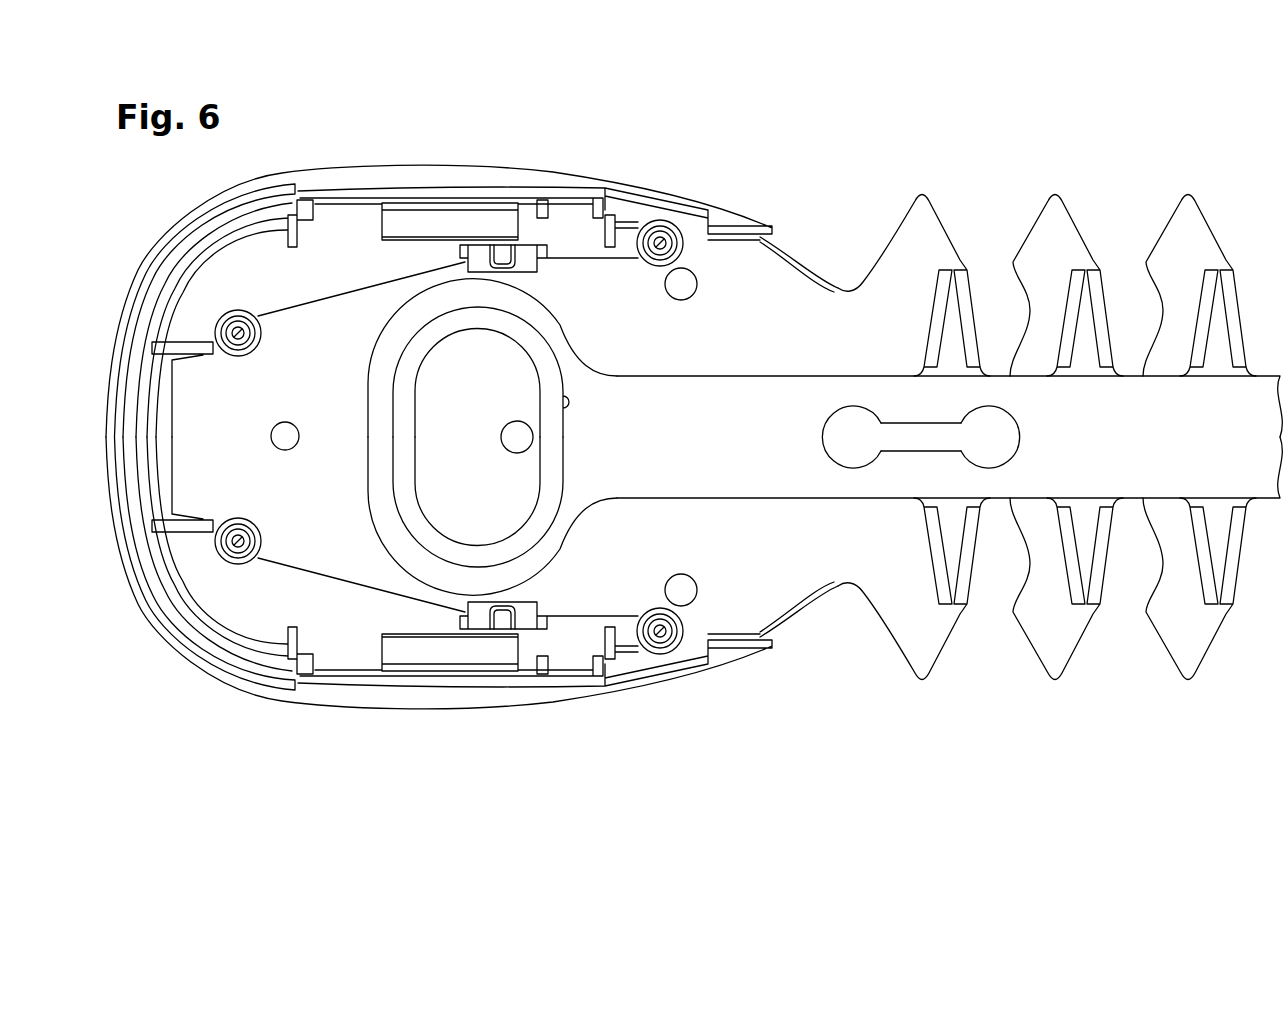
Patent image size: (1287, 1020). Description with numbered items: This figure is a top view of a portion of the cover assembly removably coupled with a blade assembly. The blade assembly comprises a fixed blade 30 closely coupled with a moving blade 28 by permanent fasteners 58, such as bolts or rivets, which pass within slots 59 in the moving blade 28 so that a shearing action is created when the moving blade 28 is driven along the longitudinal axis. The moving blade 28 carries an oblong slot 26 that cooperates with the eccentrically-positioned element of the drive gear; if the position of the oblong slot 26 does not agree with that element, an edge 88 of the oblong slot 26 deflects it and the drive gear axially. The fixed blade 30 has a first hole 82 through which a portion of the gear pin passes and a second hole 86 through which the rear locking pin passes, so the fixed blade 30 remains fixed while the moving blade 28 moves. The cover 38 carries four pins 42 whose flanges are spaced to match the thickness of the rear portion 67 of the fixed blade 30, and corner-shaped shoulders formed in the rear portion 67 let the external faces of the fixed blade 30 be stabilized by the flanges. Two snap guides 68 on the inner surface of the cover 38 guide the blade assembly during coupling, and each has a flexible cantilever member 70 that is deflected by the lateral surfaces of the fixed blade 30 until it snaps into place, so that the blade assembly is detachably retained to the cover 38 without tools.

The oblong slot 26 is at (550, 367).
The moving blade 28 is at (783, 403).
The fixed blade 30 is at (1065, 222).
The cover 38 is at (350, 233).
The pins 42 is at (660, 240).
The permanent fasteners 58 is at (1000, 437).
The slots 59 is at (912, 440).
The rear portion 67 is at (362, 558).
The snap guides 68 is at (480, 255).
The flexible cantilever member 70 is at (505, 253).
The first hole 82 is at (515, 428).
The second hole 86 is at (280, 437).
The edge 88 is at (553, 477).